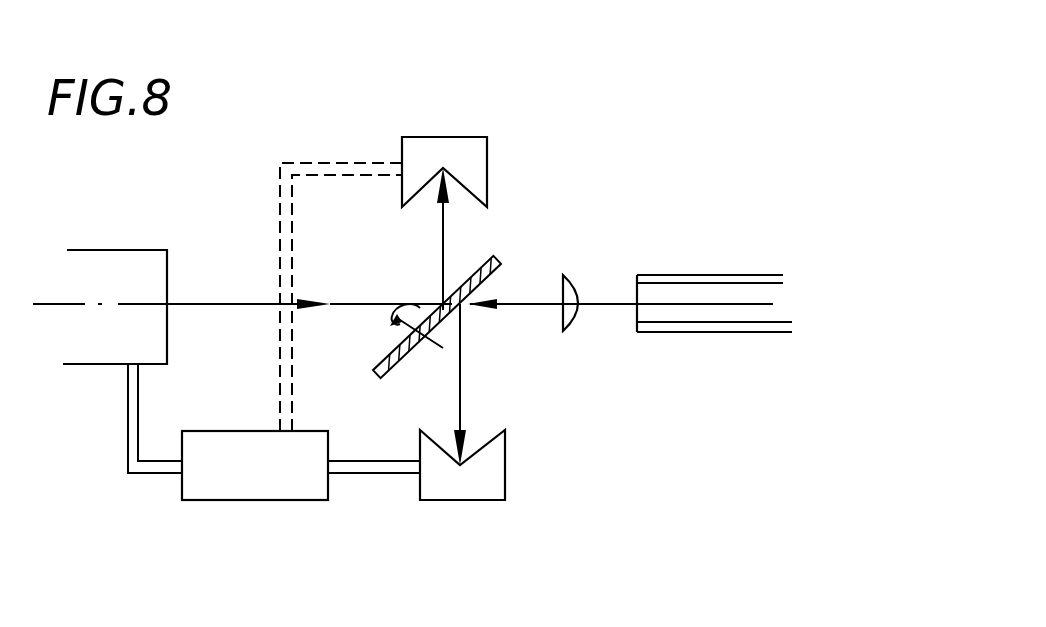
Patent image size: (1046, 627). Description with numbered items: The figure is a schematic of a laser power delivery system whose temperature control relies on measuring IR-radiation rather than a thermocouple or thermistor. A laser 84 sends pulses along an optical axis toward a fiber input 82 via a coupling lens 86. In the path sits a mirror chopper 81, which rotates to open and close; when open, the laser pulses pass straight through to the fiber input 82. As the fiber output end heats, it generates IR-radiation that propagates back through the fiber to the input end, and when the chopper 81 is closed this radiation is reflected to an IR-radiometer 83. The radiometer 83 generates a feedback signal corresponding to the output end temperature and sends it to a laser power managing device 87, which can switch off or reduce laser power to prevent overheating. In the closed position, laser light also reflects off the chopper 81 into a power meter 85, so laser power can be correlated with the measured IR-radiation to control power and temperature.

The mirror chopper 81 is at (393, 372).
The fiber input 82 is at (658, 332).
The IR-radiometer 83 is at (505, 467).
The laser 84 is at (105, 338).
The power meter 85 is at (487, 170).
The coupling lens 86 is at (573, 287).
The laser power managing device 87 is at (238, 500).